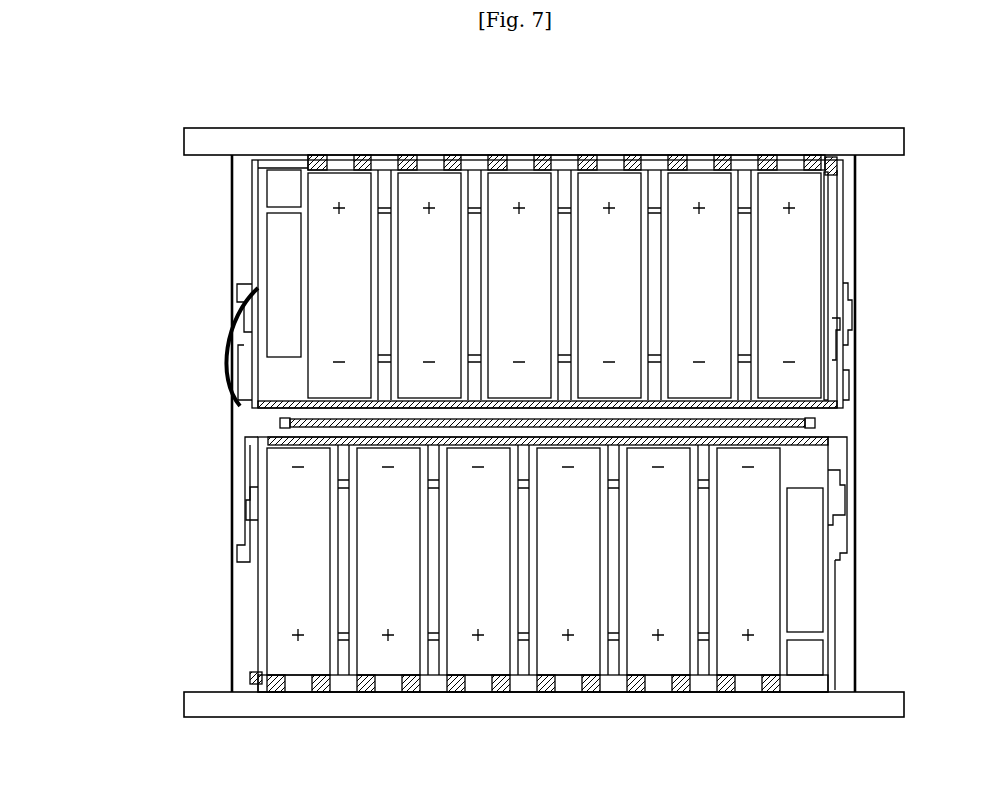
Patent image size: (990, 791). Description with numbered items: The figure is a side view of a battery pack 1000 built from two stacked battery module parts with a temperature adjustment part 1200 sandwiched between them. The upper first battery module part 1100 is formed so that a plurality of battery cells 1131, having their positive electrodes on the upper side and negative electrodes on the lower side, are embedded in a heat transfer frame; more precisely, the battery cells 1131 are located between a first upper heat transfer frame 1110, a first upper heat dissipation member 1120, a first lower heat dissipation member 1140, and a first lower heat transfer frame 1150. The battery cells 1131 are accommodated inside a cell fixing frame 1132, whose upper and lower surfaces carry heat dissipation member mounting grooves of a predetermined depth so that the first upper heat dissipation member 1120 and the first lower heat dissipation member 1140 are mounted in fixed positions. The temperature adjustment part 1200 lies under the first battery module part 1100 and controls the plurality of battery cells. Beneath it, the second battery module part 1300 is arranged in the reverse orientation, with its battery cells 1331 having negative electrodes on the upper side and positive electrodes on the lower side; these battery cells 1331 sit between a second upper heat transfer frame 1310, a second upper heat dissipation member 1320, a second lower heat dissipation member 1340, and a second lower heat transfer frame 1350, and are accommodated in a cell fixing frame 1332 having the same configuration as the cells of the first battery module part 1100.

The battery pack 1000 is at (163, 63).
The first battery module part 1100 is at (157, 123).
The first upper heat transfer frame 1110 is at (845, 197).
The first upper heat dissipation member 1120 is at (746, 166).
The battery cells 1131 is at (810, 263).
The cell fixing frame 1132 is at (823, 231).
The first lower heat dissipation member 1140 is at (796, 404).
The first lower heat transfer frame 1150 is at (848, 312).
The temperature adjustment part 1200 is at (280, 423).
The second battery module part 1300 is at (157, 437).
The second upper heat transfer frame 1310 is at (850, 461).
The second upper heat dissipation member 1320 is at (833, 502).
The battery cells 1331 is at (765, 595).
The cell fixing frame 1332 is at (807, 542).
The second lower heat dissipation member 1340 is at (640, 692).
The second lower heat transfer frame 1350 is at (852, 658).